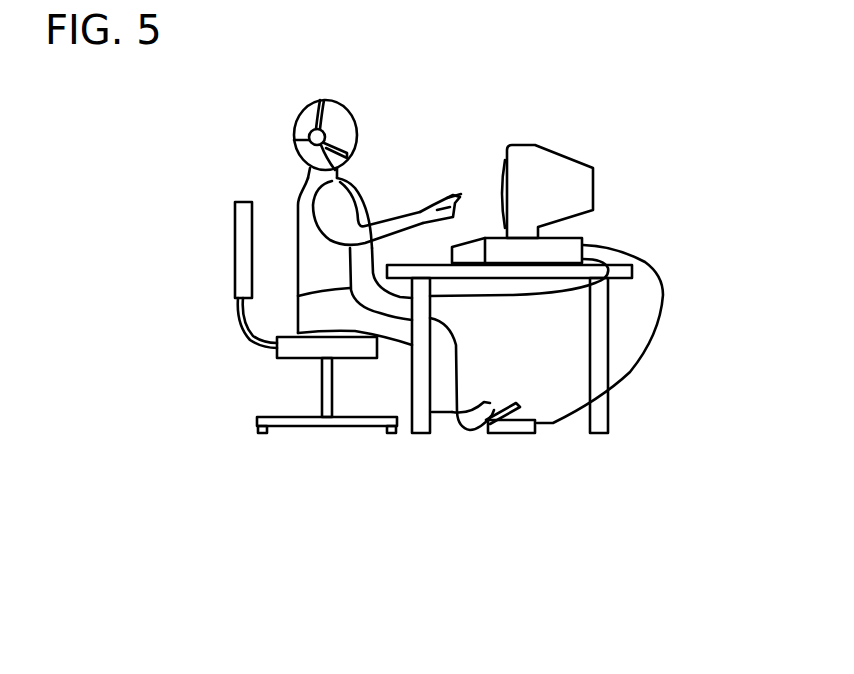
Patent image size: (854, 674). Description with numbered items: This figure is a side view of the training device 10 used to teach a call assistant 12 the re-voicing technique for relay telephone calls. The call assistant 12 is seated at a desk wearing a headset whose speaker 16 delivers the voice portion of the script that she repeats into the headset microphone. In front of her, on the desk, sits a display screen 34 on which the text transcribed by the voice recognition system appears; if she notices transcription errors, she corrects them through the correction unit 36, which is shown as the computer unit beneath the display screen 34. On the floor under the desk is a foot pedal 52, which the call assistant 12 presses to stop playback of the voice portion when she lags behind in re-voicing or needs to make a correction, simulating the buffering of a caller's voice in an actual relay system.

The training device 10 is at (525, 108).
The call assistant 12 is at (283, 189).
The speaker 16 is at (309, 140).
The display screen 34 is at (500, 193).
The correction unit 36 is at (580, 238).
The foot pedal 52 is at (517, 433).